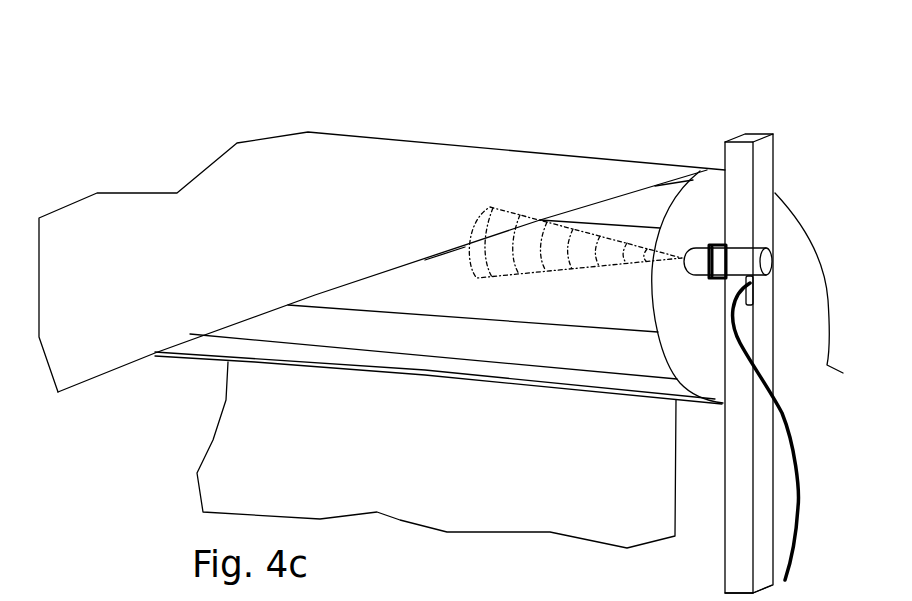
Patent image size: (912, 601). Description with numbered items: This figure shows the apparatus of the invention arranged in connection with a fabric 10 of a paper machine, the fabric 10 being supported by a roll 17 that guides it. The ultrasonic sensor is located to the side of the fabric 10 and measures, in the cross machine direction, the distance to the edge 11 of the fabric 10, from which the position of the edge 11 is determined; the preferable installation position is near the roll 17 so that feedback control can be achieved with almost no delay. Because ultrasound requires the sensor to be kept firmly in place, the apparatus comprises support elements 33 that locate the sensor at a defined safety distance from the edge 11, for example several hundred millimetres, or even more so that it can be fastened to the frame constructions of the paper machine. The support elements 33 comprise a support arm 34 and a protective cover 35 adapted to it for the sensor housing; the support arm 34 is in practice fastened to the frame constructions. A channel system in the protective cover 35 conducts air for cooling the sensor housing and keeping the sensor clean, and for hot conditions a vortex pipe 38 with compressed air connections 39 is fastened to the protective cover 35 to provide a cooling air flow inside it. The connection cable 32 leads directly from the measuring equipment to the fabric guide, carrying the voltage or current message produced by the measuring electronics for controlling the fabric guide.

The fabric 10 is at (117, 284).
The edge 11 is at (107, 375).
The roll 17 is at (243, 333).
The connection cable 32 is at (795, 298).
The support elements 33 is at (802, 125).
The support arm 34 is at (743, 562).
The protective cover 35 is at (743, 260).
The vortex pipe 38 is at (752, 295).
The compressed air connections 39 is at (800, 520).